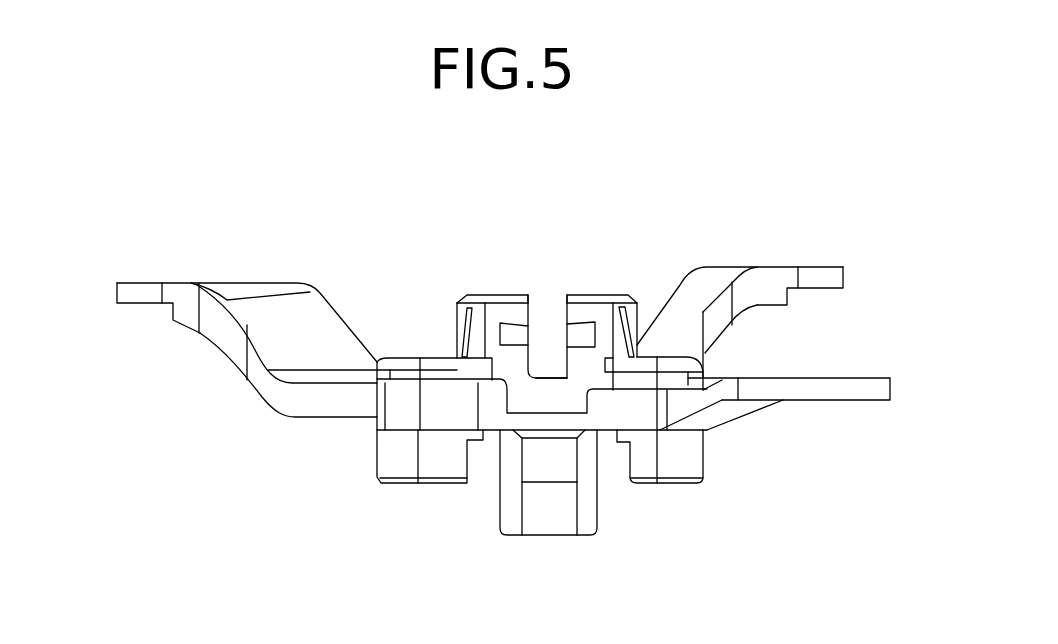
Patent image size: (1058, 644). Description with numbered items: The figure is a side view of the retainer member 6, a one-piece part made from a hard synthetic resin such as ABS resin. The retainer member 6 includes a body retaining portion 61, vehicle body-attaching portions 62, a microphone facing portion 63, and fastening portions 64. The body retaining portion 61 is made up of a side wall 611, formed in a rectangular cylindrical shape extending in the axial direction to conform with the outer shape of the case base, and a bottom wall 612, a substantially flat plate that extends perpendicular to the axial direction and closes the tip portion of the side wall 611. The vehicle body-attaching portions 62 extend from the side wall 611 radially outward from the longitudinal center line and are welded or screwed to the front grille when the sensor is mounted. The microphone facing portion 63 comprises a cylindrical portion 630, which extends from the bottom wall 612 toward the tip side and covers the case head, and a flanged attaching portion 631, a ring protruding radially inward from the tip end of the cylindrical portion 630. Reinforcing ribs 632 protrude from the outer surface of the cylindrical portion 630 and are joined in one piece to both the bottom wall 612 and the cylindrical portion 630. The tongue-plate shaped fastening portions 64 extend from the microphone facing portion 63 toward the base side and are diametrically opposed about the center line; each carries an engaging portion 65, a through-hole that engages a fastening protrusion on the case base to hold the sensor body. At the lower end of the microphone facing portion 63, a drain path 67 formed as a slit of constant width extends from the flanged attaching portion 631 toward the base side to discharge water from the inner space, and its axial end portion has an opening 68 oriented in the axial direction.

The retainer member 6 is at (845, 195).
The body retaining portion 61 is at (375, 483).
The side wall 611 is at (706, 457).
The bottom wall 612 is at (402, 357).
The vehicle body-attaching portion 62 is at (128, 291).
The microphone facing portion 63 is at (573, 386).
The cylindrical portion 630 is at (457, 310).
The flanged attaching portion 631 is at (608, 293).
The reinforcing rib 632 is at (633, 345).
The fastening portion 64 is at (562, 517).
The engaging portion 65 is at (548, 472).
The drain path 67 is at (540, 378).
The opening 68 is at (543, 300).